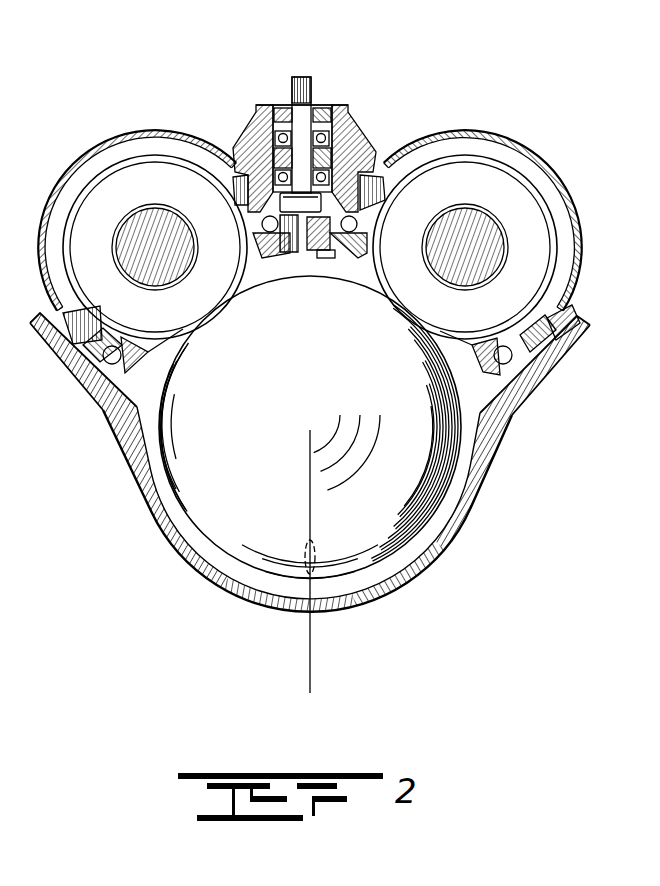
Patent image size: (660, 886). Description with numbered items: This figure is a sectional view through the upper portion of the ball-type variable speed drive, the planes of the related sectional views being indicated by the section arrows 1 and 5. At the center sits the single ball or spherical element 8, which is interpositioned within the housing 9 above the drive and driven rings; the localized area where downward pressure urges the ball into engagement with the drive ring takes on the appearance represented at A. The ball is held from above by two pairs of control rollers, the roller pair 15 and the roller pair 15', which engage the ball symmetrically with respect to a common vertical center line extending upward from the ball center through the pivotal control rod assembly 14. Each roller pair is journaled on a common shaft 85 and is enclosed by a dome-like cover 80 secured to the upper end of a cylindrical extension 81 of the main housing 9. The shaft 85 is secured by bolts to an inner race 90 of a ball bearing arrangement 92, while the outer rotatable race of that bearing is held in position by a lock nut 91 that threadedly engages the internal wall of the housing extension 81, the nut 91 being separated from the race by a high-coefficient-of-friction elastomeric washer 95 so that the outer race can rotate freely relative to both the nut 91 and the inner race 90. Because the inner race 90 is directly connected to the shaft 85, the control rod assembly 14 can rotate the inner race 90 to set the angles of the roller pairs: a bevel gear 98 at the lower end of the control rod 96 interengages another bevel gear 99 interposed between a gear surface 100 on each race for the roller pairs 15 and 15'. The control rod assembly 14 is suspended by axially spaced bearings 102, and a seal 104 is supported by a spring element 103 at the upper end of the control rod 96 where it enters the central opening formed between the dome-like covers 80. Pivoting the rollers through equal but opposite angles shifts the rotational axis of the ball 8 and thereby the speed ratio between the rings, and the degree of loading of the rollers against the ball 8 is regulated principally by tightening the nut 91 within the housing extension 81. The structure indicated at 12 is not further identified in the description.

The section line 1- 1 is at (308, 421).
The section line 5- 5 is at (340, 155).
The ball 8 is at (448, 488).
The housing 9 is at (442, 558).
The machine frame 12 is at (0, 508).
The control rod assembly 14 is at (259, 100).
The control rollers 15 is at (155, 221).
The roller pair 15' is at (496, 247).
The dome-like covers 80 is at (53, 186).
The cylindrical extensions 81 is at (78, 383).
The common shaft 85 is at (118, 233).
The inner race 90 is at (518, 398).
The lock nut 91 is at (80, 322).
The ball bearing arrangement 92 is at (116, 347).
The elastomeric washer 95 is at (100, 340).
The control rod 96 is at (300, 77).
The bevel gear 98 is at (286, 203).
The bevel gear 99 is at (333, 208).
The gear surface 100 is at (340, 208).
The bearings 102 is at (276, 175).
The spring element 103 is at (283, 107).
The seal 104 is at (321, 107).
The localized contact area A is at (302, 548).